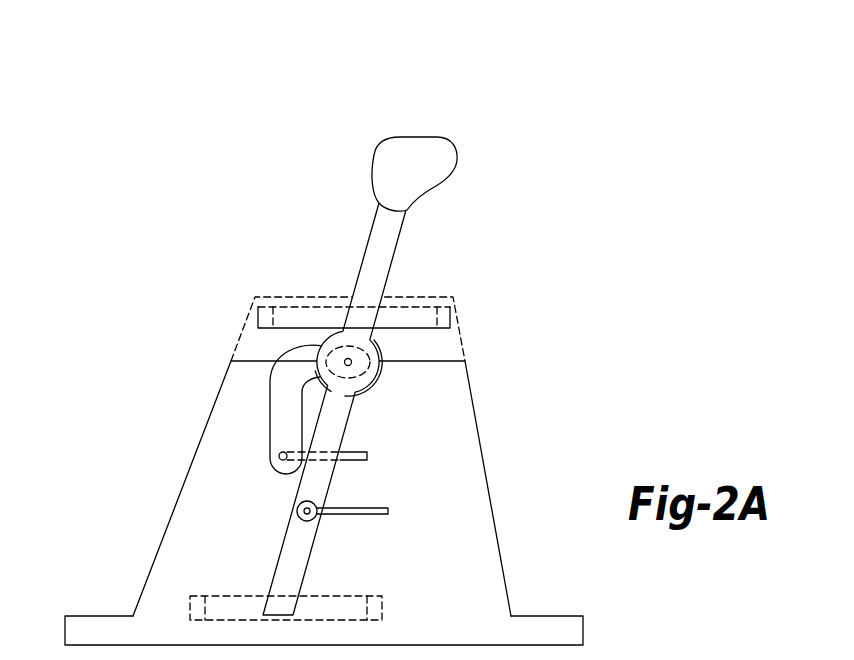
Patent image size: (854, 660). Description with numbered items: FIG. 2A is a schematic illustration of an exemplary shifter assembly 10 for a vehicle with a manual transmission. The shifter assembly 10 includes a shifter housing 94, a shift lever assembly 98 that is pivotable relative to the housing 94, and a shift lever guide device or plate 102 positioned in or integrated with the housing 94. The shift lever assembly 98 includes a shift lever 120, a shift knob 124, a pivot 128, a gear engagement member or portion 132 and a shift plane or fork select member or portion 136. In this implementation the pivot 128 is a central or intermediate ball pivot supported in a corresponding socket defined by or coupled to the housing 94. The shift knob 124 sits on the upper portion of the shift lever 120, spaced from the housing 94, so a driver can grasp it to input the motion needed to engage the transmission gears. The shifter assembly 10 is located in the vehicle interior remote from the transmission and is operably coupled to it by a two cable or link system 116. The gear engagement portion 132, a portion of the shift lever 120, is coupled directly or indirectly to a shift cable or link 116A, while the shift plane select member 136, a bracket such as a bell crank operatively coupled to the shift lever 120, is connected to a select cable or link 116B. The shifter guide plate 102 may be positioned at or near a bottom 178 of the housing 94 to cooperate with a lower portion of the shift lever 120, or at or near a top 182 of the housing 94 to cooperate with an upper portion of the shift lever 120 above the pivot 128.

The shifter assembly 10 is at (590, 162).
The shifter housing 94 is at (484, 436).
The shift lever assembly 98 is at (366, 236).
The shift lever guide device or plate 102 is at (419, 335).
The two cable or link system 116 is at (424, 481).
The shift cable or link 116A is at (373, 506).
The select cable or link 116B is at (355, 452).
The shift lever 120 is at (398, 240).
The shift knob 124 is at (419, 137).
The pivot 128 is at (377, 353).
The gear engagement member or portion 132 is at (324, 525).
The shift plane or fork select member 136 is at (263, 393).
The bottom 178 is at (173, 645).
The top 182 is at (250, 312).